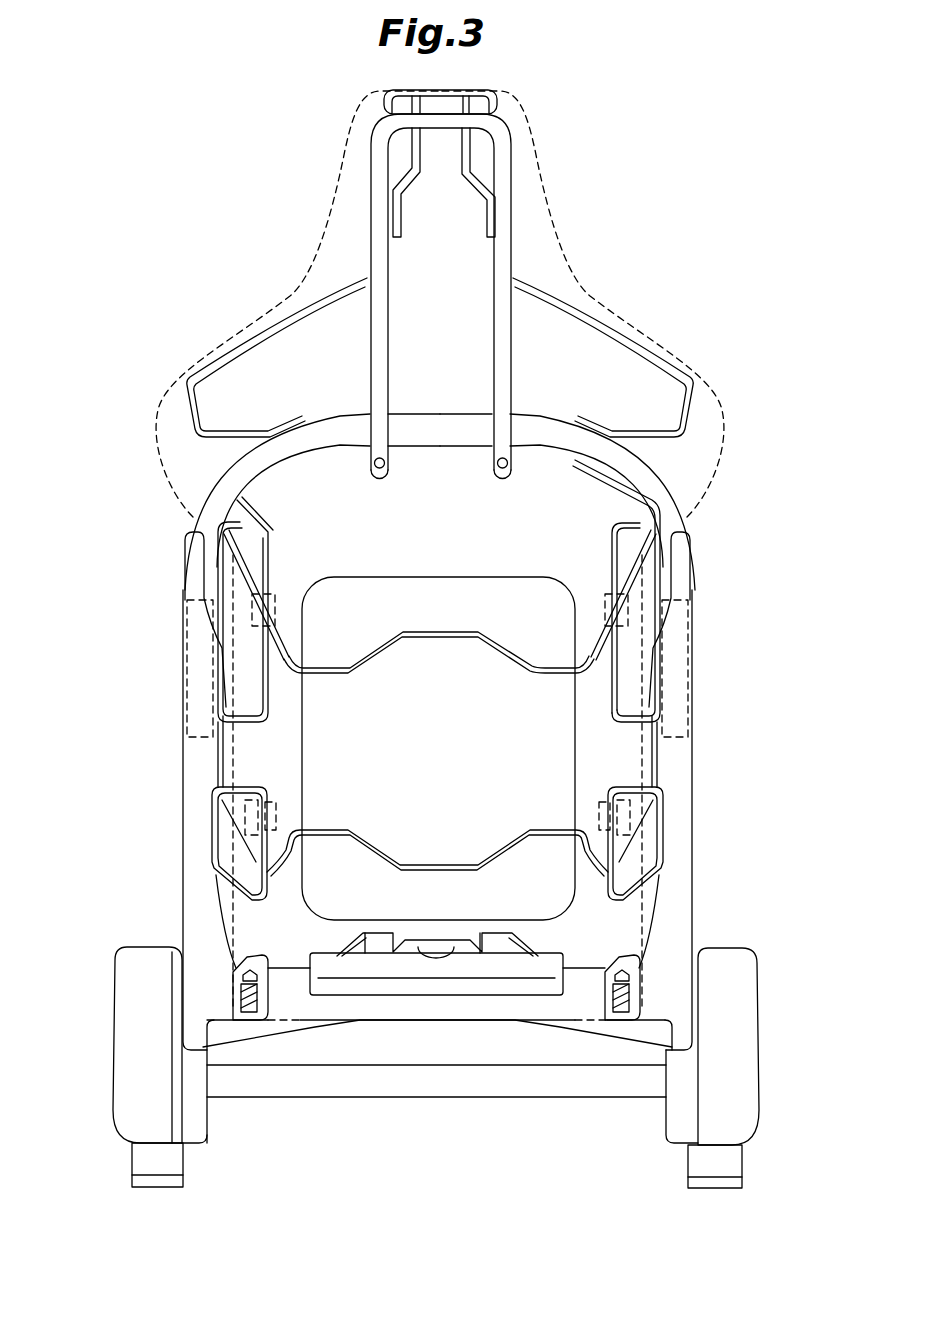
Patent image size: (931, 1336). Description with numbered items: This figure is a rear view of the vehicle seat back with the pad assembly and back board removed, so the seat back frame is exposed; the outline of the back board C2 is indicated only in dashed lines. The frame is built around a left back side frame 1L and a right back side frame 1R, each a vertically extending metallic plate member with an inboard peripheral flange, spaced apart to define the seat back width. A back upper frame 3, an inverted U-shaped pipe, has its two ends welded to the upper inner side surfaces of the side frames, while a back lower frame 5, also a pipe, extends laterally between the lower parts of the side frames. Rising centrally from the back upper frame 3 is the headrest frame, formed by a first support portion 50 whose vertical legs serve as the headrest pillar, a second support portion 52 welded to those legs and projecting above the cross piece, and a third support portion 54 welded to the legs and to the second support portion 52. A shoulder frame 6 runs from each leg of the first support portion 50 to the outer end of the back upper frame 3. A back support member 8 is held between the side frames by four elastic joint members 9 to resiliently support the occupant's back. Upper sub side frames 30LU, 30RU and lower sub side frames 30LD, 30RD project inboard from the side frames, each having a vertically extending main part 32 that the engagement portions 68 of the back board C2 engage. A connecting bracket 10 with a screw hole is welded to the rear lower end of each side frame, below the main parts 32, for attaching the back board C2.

The back board C2 is at (327, 183).
The first support portion 50 is at (505, 219).
The second support portion 52 is at (463, 146).
The third support portion 54 is at (497, 106).
The shoulder frame 6 is at (245, 348).
The back upper frame 3 is at (667, 481).
The left upper sub side frame 30LU is at (258, 512).
The right upper sub side frame 30RU is at (623, 515).
The back support member 8 is at (465, 587).
The elastic joint member 9 is at (374, 645).
The engagement portion 68 is at (250, 604).
The main part 32 is at (222, 668).
The left back side frame 1L is at (188, 748).
The right back side frame 1R is at (684, 752).
The left lower sub side frame 30LD is at (212, 848).
The right lower sub side frame 30RD is at (662, 856).
The connecting bracket 10 is at (230, 967).
The back lower frame 5 is at (487, 1007).